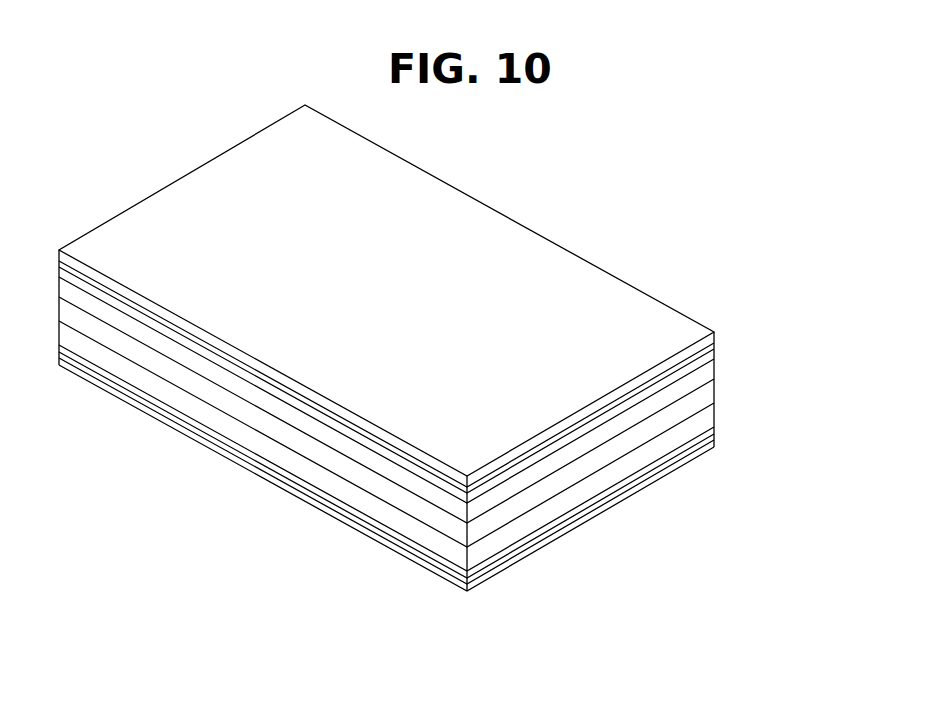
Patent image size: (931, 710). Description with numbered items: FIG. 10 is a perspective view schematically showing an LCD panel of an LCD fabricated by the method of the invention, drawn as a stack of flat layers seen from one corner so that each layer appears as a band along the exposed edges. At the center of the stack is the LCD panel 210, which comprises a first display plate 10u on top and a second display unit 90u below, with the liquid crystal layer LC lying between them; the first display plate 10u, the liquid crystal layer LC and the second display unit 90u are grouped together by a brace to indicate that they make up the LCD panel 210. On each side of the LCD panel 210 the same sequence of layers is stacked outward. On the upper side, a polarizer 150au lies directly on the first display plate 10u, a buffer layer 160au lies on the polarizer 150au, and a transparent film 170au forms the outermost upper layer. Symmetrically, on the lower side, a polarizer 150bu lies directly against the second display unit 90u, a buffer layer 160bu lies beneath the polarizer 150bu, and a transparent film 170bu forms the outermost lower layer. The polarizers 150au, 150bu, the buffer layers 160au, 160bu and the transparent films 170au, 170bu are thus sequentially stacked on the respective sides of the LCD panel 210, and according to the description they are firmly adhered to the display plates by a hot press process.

The transparent film 170au is at (716, 336).
The buffer layer 160au is at (716, 342).
The polarizer 150au is at (716, 349).
The first display plate 10u is at (716, 364).
The liquid crystal layer LC is at (716, 391).
The second display unit 90u is at (716, 415).
The LCD panel 210 is at (462, 434).
The polarizer 150bu is at (716, 429).
The buffer layer 160bu is at (716, 436).
The transparent film 170bu is at (716, 443).